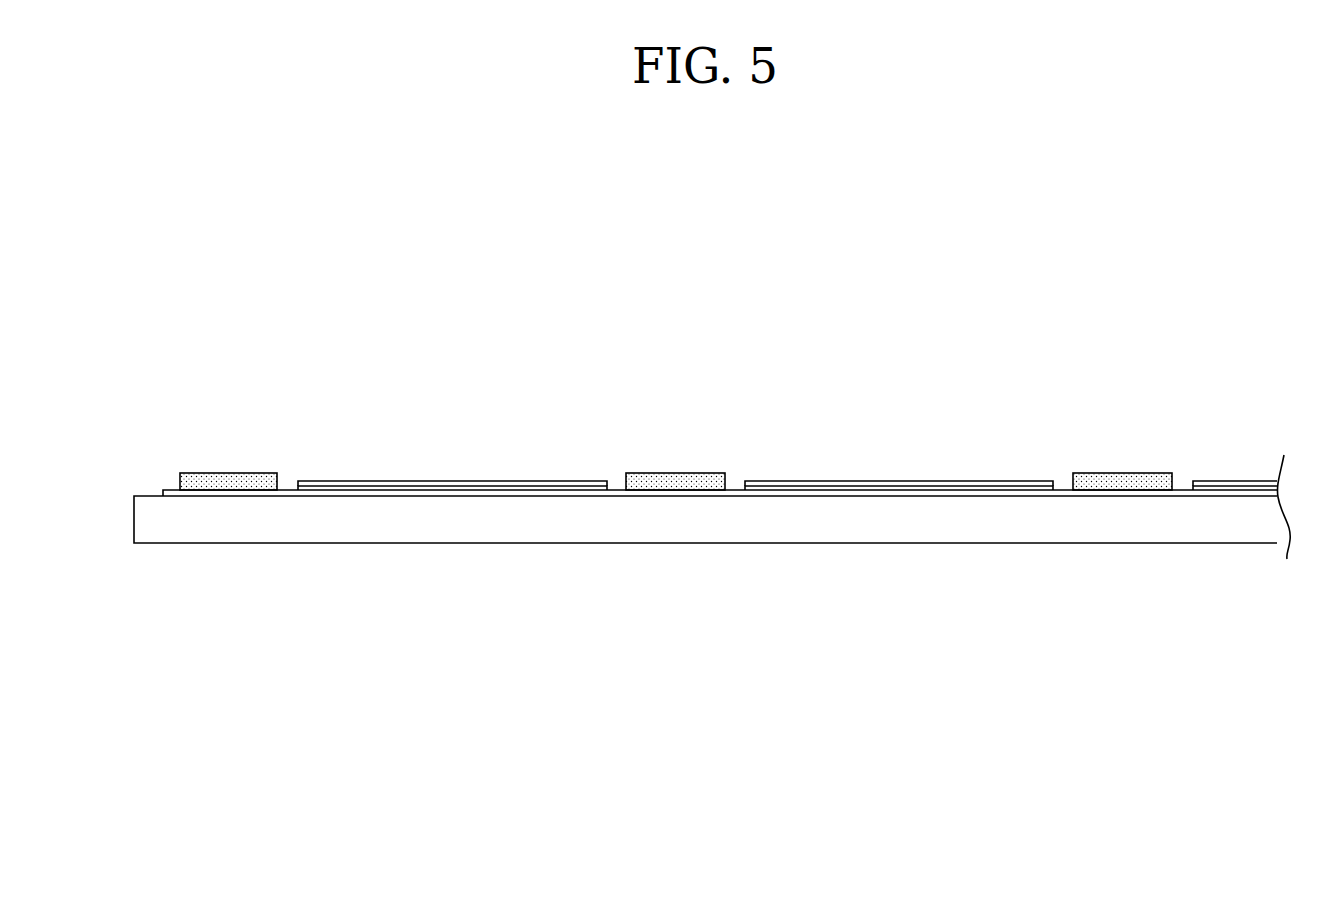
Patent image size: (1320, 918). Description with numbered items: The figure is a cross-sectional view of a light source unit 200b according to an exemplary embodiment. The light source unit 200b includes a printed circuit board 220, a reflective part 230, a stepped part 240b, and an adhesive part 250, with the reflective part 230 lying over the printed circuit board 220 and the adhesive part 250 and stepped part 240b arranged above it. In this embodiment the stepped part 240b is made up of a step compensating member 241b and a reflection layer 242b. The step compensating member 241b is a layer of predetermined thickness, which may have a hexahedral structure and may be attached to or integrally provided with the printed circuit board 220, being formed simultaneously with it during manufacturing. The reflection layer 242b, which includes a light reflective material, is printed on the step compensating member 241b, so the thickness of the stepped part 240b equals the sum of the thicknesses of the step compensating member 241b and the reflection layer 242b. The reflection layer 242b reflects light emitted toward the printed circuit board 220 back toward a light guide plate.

The light source unit 200b is at (712, 459).
The printed circuit board 220 is at (567, 530).
The reflective part 230 is at (616, 490).
The stepped part 240b is at (787, 424).
The step compensating member 241b is at (409, 489).
The reflection layer 242b is at (481, 481).
The adhesive part 250 is at (228, 480).